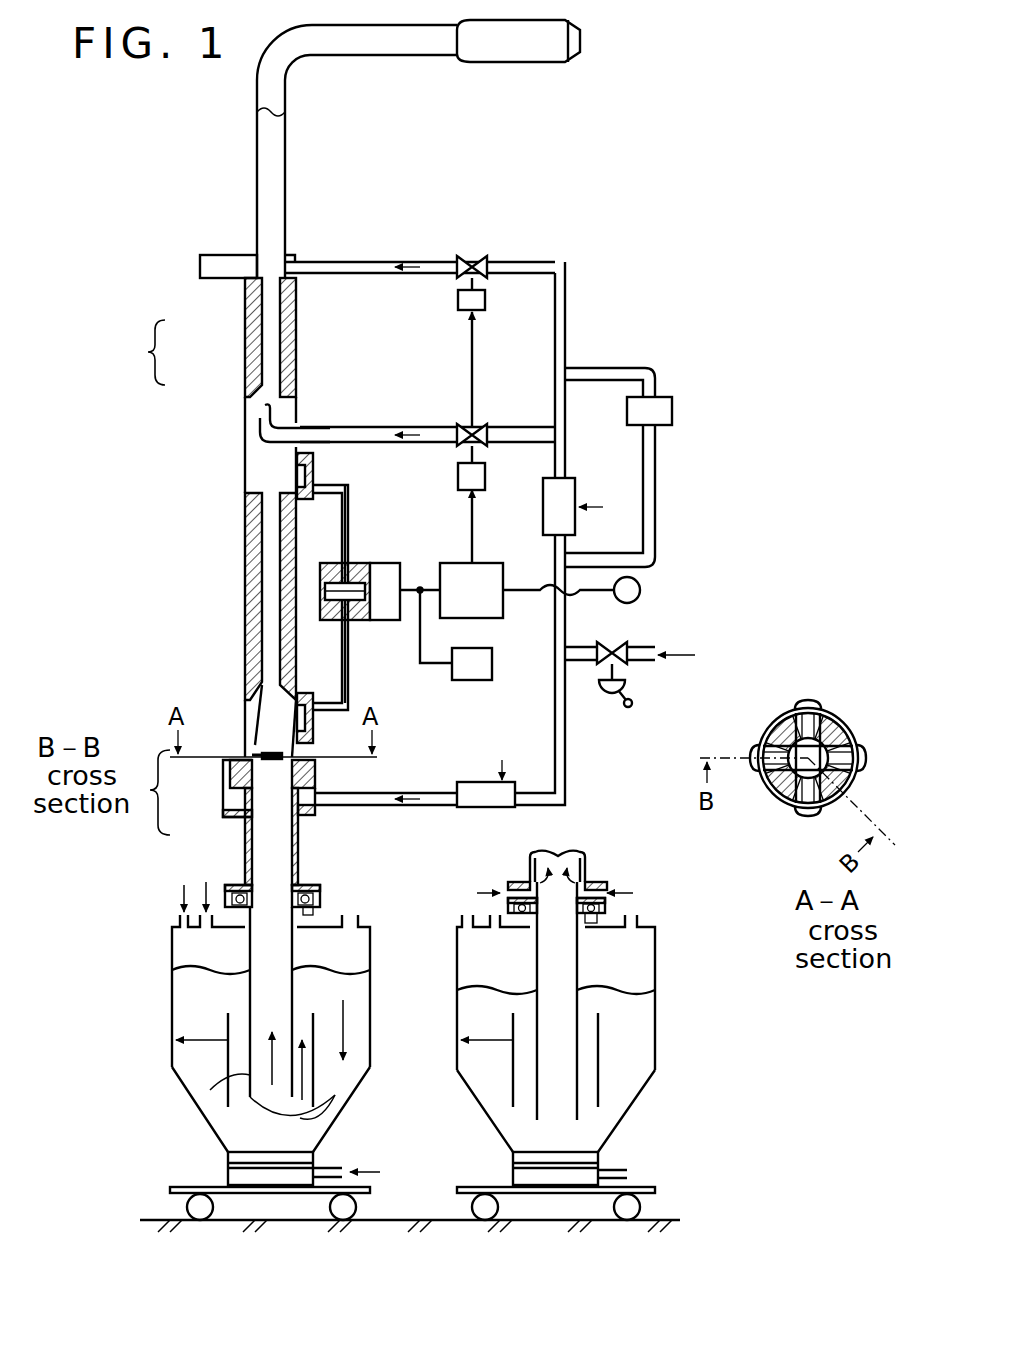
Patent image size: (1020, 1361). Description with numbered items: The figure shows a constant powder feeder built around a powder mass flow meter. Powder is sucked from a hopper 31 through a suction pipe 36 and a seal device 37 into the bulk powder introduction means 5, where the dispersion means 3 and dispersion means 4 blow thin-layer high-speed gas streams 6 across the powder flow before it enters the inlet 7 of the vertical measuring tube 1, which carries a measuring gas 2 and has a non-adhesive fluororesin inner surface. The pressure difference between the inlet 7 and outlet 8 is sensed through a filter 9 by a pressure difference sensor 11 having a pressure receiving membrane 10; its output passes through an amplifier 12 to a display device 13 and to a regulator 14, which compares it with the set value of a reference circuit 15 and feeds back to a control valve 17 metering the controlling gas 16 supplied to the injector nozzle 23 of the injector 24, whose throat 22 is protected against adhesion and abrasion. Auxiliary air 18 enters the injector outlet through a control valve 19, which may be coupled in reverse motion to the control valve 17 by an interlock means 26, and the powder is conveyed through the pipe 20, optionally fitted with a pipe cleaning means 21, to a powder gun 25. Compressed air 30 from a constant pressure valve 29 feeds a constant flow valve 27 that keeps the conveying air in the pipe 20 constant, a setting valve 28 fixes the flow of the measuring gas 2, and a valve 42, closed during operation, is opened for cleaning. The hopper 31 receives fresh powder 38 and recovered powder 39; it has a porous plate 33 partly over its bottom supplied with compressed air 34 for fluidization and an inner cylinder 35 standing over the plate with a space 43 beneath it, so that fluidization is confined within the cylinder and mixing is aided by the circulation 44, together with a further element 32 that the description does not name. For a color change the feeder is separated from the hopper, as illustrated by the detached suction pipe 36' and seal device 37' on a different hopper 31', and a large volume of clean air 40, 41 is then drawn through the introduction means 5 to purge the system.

The measuring tube 1 is at (275, 620).
The measuring gas 2 is at (410, 800).
The dispersion means 3 is at (225, 780).
The dispersion means 4 is at (270, 753).
The bulk powder introduction means 5 is at (300, 822).
The thin-layer high-speed gas streams 6 is at (808, 762).
The inlet 7 is at (268, 722).
The outlet 8 is at (278, 475).
The filter 9 is at (313, 470).
The pressure receiving membrane 10 is at (347, 578).
The pressure difference sensor 11 is at (352, 622).
The amplifier 12 is at (381, 568).
The display device 13 is at (476, 683).
The regulator 14 is at (480, 565).
The reference circuit 15 is at (640, 584).
The controlling gas 16 is at (430, 430).
The control valve 17 is at (477, 440).
The auxiliary air 18 is at (425, 270).
The control valve 19 is at (477, 270).
The pipe 20 is at (280, 170).
The pipe cleaning means 21 is at (225, 262).
The throat 22 is at (245, 337).
The injector nozzle 23 is at (268, 412).
The injector 24 is at (141, 352).
The powder gun 25 is at (510, 45).
The interlock means 26 is at (478, 360).
The constant flow valve 27 is at (568, 493).
The setting valve 28 is at (470, 782).
The constant pressure valve 29 is at (617, 650).
The compressed air 30 is at (672, 655).
The hopper 31 is at (235, 1032).
The hopper 31' is at (604, 1050).
The liquid flow path 32 is at (210, 1090).
The porous plate 33 is at (250, 1153).
The compressed air 34 is at (365, 1170).
The inner cylinder 35 is at (228, 1020).
The suction pipe 36 is at (359, 940).
The suction pipe 36' is at (657, 945).
The seal device 37 is at (314, 890).
The seal device 37' is at (618, 904).
The fresh powder 38 is at (183, 908).
The recovered powder 39 is at (205, 905).
The clean air 40 is at (620, 890).
The clean air 41 is at (535, 876).
The valve 42 is at (627, 409).
The space 43 is at (305, 1135).
The circulation 44 is at (345, 1030).